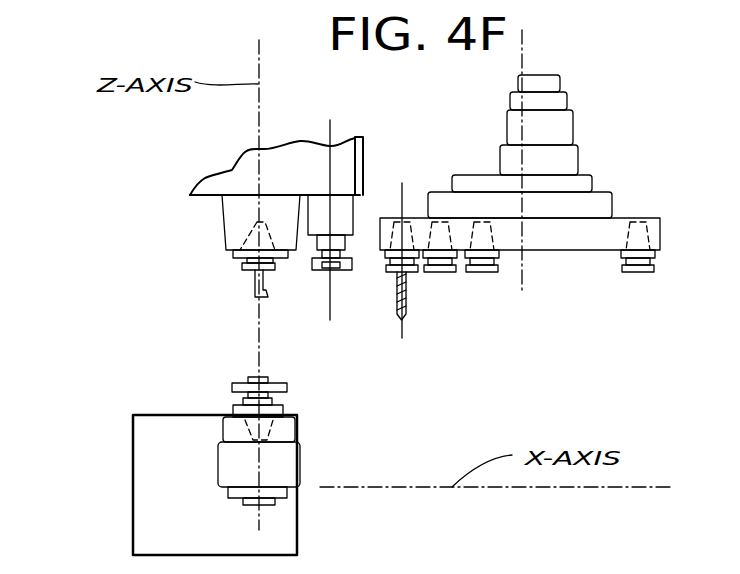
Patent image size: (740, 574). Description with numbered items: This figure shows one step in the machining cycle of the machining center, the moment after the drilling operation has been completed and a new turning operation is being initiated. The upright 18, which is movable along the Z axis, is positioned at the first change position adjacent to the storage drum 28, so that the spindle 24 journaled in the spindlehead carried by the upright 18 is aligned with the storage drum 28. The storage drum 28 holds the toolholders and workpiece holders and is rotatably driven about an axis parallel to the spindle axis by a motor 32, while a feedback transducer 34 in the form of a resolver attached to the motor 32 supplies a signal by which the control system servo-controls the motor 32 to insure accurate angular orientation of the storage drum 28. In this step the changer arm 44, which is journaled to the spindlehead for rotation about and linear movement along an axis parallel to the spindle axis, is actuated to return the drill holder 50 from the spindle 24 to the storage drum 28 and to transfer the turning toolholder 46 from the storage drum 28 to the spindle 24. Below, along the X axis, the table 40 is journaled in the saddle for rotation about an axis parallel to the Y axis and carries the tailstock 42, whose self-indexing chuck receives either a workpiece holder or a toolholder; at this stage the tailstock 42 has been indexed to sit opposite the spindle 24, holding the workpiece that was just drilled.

The upright 18 is at (245, 173).
The spindle 24 is at (235, 258).
The storage drum 28 is at (597, 240).
The motor 32 is at (565, 122).
The feedback transducer 34 is at (552, 83).
The table 40 is at (134, 535).
The tailstock 42 is at (232, 473).
The changer arm 44 is at (352, 266).
The turning toolholder 46 is at (252, 291).
The drill holder 50 is at (407, 307).